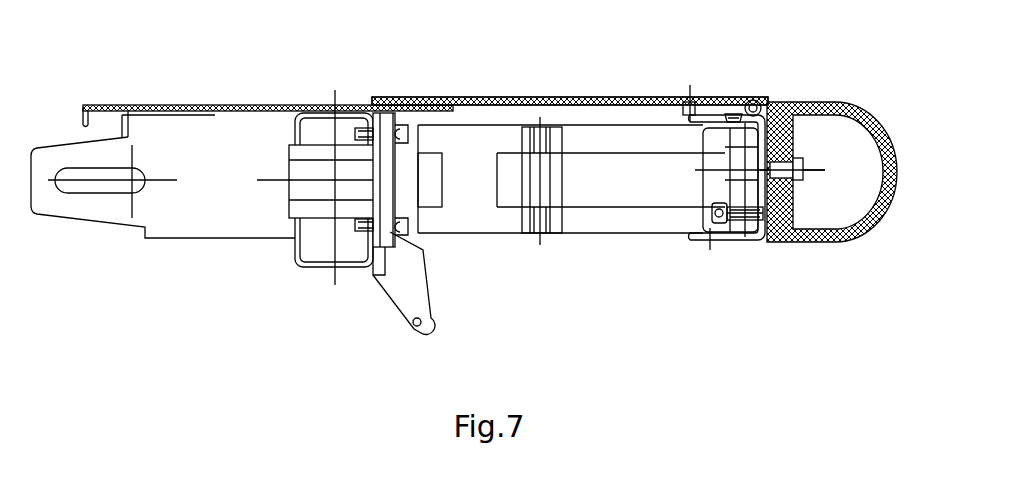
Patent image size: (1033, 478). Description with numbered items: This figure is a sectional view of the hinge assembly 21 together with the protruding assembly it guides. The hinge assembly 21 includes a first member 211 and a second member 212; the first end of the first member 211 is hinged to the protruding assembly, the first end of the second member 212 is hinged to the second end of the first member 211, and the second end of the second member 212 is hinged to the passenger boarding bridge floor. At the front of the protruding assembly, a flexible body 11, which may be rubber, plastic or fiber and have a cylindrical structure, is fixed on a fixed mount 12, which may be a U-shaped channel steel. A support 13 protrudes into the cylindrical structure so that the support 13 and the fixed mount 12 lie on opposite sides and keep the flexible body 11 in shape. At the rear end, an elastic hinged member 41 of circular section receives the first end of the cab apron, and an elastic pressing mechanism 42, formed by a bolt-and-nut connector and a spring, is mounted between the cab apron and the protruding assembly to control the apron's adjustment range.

The flexible body 11 is at (893, 127).
The fixed mount 12 is at (732, 235).
The support 13 is at (793, 196).
The hinge assembly 21 is at (542, 129).
The first member 211 is at (571, 145).
The second member 212 is at (513, 138).
The elastic hinged member 41 is at (752, 100).
The elastic pressing mechanism 42 is at (688, 100).